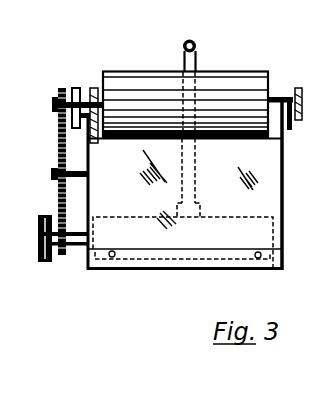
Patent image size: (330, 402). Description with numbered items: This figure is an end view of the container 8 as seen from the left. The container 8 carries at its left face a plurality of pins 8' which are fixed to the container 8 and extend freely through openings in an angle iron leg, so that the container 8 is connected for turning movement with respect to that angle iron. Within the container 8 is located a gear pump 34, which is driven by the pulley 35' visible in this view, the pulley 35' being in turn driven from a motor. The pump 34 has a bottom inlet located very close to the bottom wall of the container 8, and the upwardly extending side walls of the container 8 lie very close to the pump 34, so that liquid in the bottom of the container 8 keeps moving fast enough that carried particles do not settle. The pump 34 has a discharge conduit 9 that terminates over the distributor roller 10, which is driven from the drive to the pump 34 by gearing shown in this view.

The discharge conduit 9 is at (194, 42).
The distributor roller 10 is at (250, 104).
The container 8 is at (185, 185).
The pins 8' is at (267, 275).
The gear pump 34 is at (168, 262).
The pulley 35' is at (65, 261).